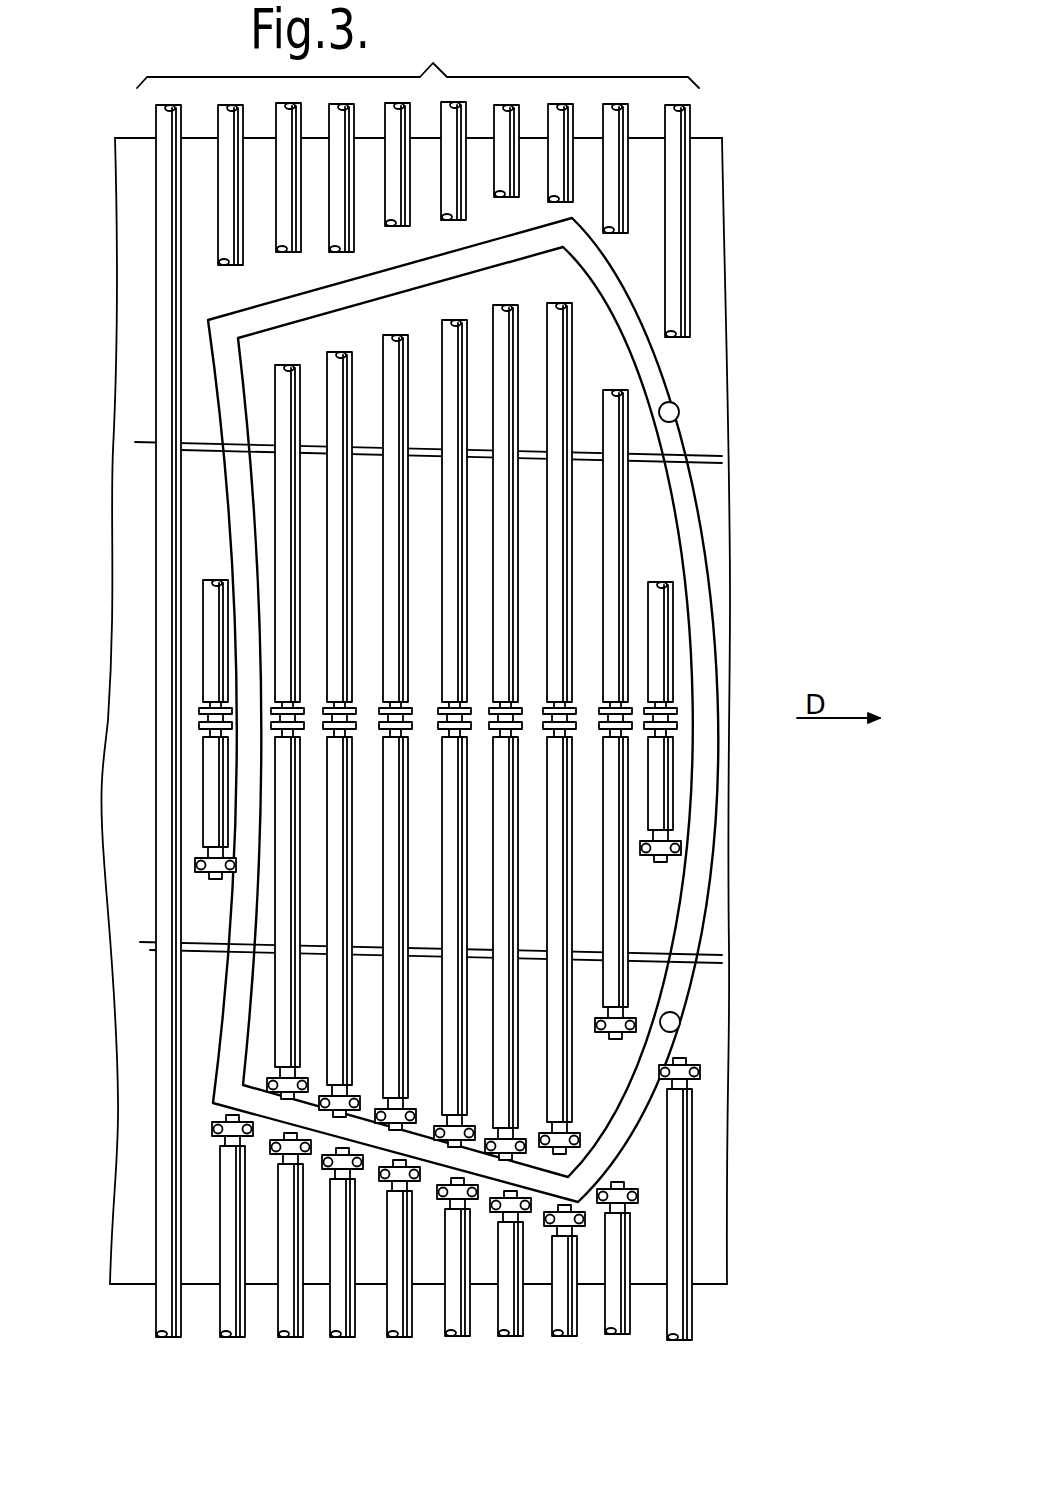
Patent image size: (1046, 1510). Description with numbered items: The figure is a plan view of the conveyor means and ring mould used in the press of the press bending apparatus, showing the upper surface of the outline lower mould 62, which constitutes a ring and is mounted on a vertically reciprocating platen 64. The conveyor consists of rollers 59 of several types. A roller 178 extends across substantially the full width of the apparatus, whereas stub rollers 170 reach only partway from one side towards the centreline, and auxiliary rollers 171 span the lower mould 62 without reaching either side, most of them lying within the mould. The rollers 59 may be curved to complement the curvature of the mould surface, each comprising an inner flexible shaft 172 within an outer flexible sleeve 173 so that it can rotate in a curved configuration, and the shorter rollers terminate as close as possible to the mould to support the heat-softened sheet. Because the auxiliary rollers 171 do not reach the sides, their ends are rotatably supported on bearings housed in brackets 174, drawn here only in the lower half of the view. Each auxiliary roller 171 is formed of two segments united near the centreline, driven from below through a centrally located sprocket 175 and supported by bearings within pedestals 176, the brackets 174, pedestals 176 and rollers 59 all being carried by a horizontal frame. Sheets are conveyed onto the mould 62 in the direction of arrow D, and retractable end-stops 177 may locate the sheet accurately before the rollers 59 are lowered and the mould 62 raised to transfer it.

The rollers 59 is at (418, 184).
The lower mould 62 is at (691, 548).
The platen 64 is at (705, 222).
The stub rollers 170 is at (680, 1298).
The auxiliary rollers 171 is at (213, 666).
The inner flexible shaft 172 is at (215, 848).
The outer flexible sleeve 173 is at (213, 837).
The brackets 174 is at (273, 1147).
The sprockets 175 is at (668, 718).
The pedestals 176 is at (673, 710).
The retractable end-stops 177 is at (680, 410).
The roller 178 is at (168, 397).